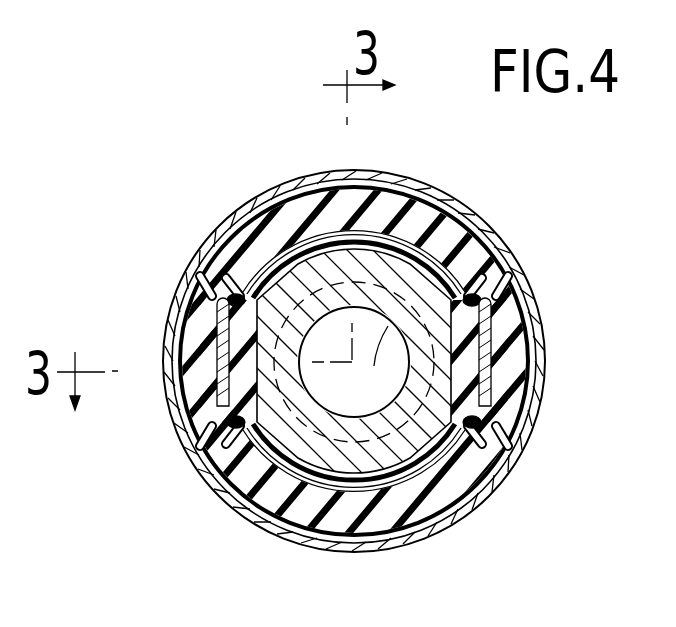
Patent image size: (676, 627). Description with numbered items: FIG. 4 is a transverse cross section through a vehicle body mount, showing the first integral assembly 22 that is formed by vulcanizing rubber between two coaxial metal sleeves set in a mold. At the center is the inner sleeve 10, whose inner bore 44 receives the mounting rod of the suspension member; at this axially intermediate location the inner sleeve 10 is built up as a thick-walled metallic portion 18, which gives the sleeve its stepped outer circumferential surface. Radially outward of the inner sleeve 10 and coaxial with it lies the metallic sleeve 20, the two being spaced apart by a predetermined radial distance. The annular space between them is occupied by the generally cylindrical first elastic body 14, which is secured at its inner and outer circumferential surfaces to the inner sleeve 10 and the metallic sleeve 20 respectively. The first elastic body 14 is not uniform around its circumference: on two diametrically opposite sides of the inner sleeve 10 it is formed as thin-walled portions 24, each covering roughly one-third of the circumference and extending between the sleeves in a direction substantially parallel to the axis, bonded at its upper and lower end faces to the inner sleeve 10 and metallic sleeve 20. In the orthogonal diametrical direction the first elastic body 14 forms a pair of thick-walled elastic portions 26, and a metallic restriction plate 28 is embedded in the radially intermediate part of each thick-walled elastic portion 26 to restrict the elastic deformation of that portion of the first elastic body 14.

The inner sleeve 10 is at (236, 499).
The first elastic body 14 is at (208, 262).
The thick-walled metallic portion 18 is at (388, 258).
The metallic sleeve 20 is at (497, 246).
The first integral assembly 22 is at (240, 130).
The thin-walled portions 24 is at (356, 213).
The thick-walled elastic portions 26 is at (518, 345).
The metallic restriction plate 28 is at (489, 316).
The inner bore 44 is at (354, 362).